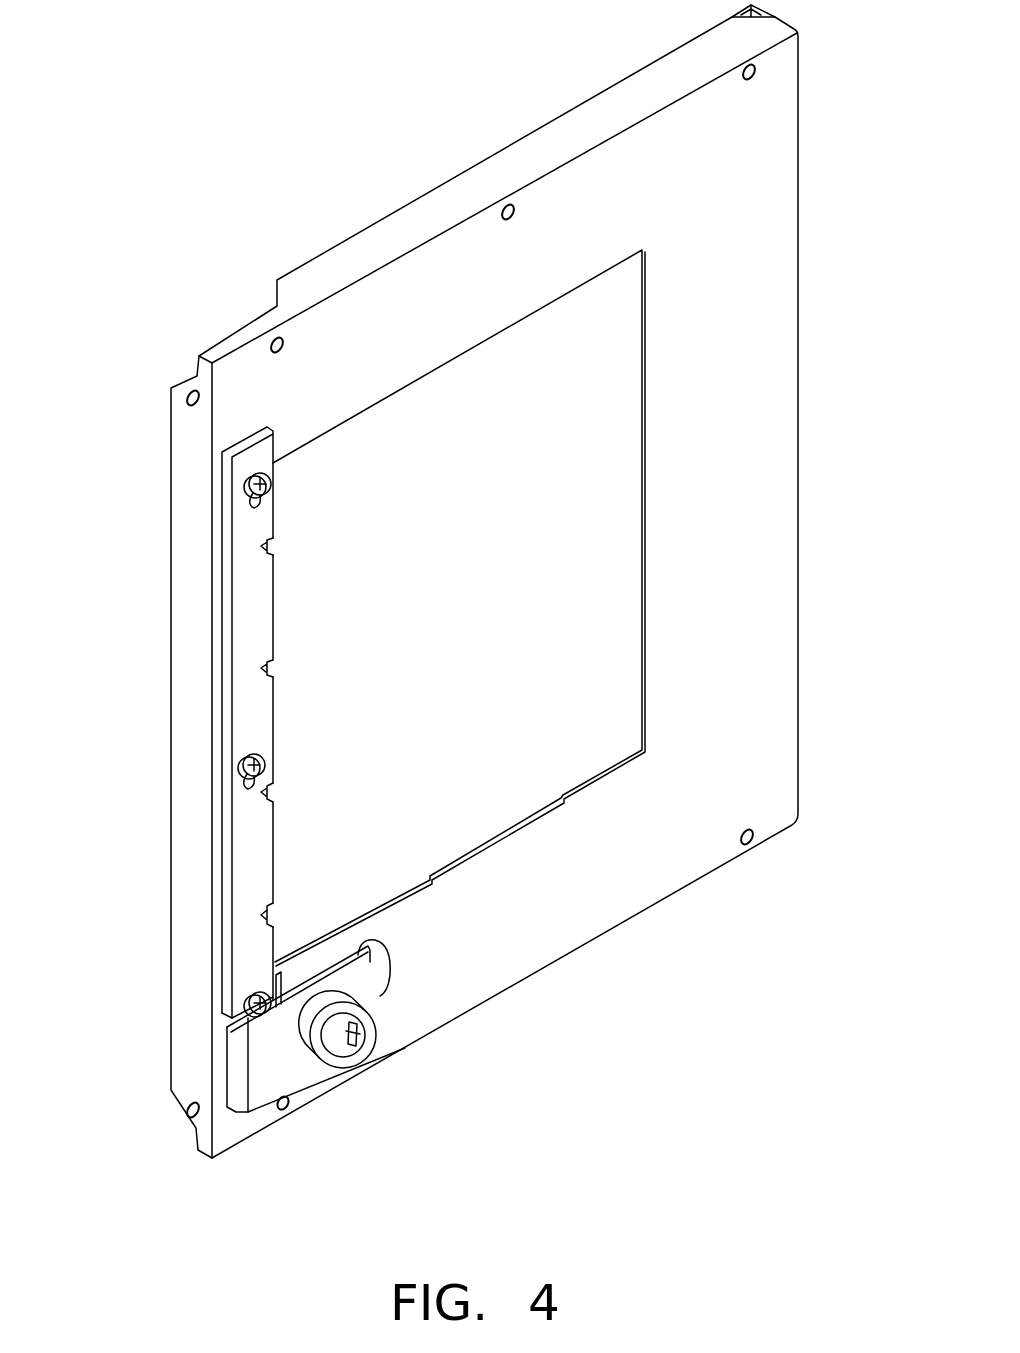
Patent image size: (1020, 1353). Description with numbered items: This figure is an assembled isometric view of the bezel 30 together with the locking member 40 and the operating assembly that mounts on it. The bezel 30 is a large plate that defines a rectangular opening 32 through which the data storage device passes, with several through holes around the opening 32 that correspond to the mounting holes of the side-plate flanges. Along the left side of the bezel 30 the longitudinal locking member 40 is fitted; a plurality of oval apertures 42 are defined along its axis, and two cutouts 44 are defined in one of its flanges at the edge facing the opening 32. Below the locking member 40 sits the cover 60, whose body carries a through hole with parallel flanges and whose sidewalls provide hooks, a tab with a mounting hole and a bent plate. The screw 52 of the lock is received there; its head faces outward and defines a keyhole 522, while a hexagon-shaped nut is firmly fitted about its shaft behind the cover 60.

The bezel 30 is at (766, 375).
The opening 32 is at (562, 628).
The locking member 40 is at (257, 614).
The oval apertures 42 is at (250, 503).
The cutouts 44 is at (268, 783).
The screw 52 is at (400, 1086).
The keyhole 522 is at (358, 1038).
The cover 60 is at (257, 1085).